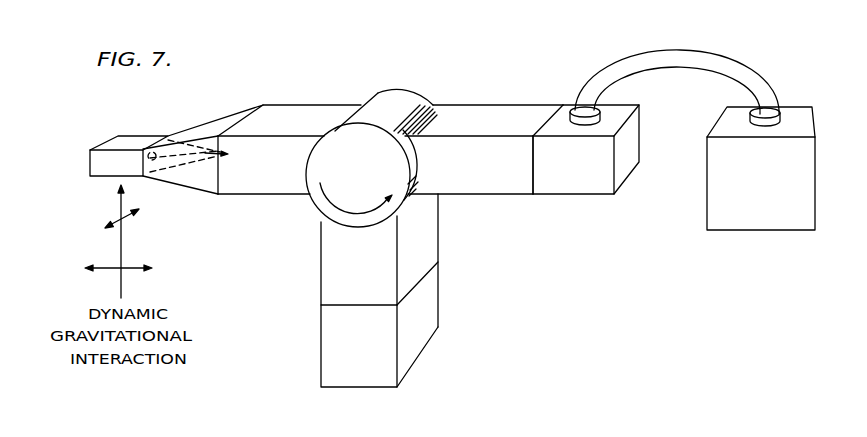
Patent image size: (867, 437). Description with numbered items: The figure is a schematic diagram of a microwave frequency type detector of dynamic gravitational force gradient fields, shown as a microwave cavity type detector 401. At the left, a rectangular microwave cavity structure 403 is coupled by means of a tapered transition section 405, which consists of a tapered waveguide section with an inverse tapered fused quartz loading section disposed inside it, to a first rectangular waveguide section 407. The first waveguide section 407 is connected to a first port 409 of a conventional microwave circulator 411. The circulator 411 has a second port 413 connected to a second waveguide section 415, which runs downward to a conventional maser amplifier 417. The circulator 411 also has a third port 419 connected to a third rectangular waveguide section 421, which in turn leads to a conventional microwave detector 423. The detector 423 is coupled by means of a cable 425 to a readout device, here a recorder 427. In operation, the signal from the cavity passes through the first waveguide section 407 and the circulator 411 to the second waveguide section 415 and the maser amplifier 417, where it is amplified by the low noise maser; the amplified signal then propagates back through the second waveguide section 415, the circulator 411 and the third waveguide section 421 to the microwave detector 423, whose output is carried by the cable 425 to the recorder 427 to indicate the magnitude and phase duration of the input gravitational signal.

The microwave cavity type detector 401 is at (313, 84).
The rectangular microwave cavity structure 403 is at (113, 139).
The tapered transition section 405 is at (202, 128).
The first rectangular waveguide section 407 is at (293, 90).
The first port 409 is at (339, 136).
The microwave circulator 411 is at (408, 97).
The second port 413 is at (323, 218).
The second waveguide section 415 is at (325, 267).
The maser amplifier 417 is at (323, 351).
The third port 419 is at (416, 135).
The third rectangular waveguide section 421 is at (507, 115).
The microwave detector 423 is at (575, 182).
The cable 425 is at (672, 57).
The recorder 427 is at (790, 115).